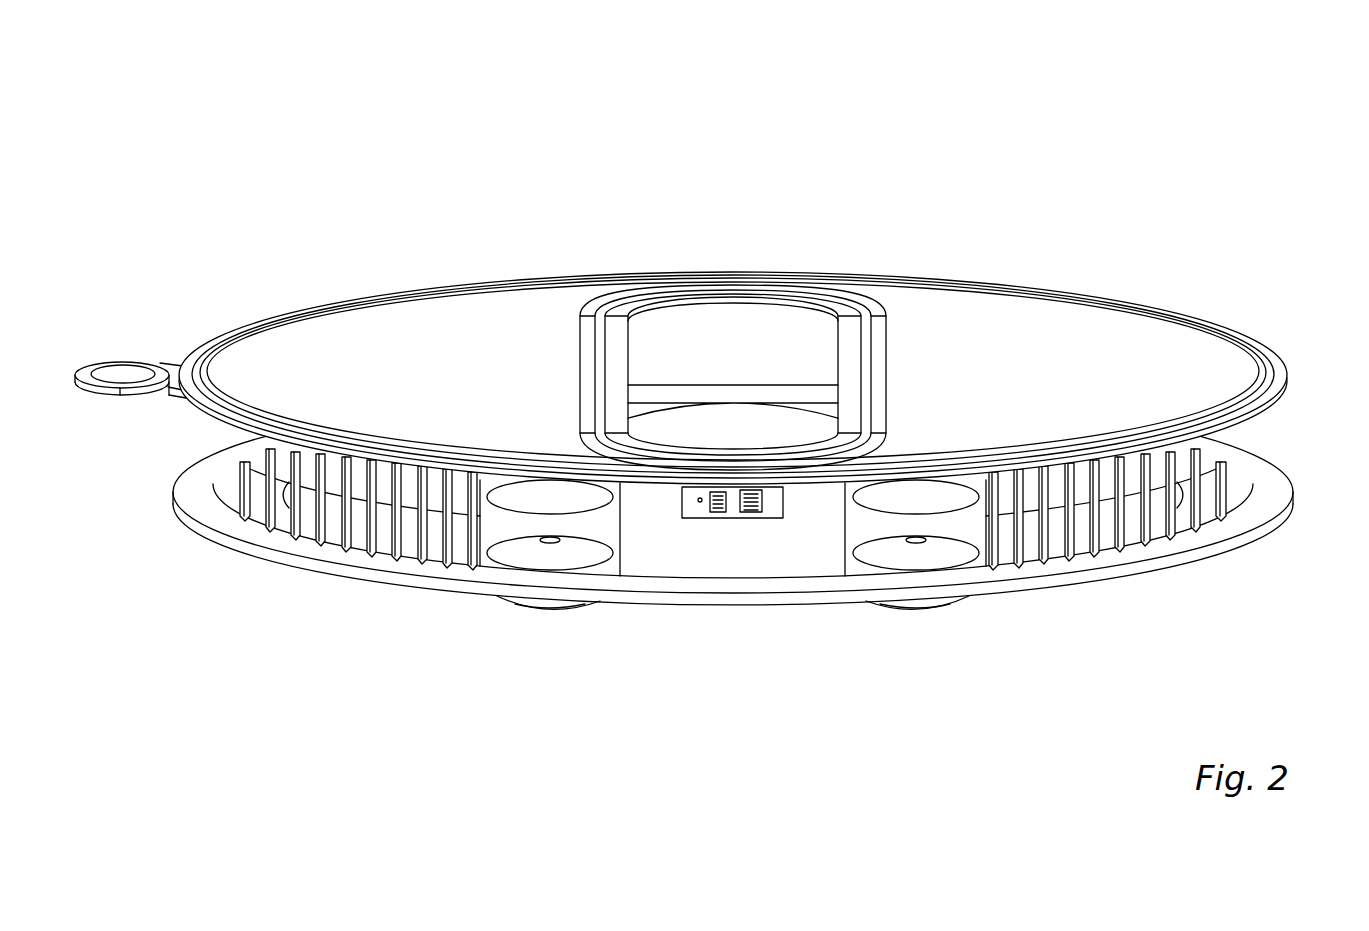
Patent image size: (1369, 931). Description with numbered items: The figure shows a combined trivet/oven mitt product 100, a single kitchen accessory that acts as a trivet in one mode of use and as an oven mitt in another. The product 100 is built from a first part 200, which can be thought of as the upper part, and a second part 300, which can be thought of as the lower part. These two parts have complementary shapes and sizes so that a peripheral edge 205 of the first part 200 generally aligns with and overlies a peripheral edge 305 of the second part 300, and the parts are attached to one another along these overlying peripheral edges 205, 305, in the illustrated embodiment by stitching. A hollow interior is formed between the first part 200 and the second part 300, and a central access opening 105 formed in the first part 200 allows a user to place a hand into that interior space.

The combined trivet/oven mitt product 100 is at (715, 349).
The central access opening 105 is at (707, 325).
The first part 200 is at (681, 323).
The peripheral edge of the first part 205 is at (338, 303).
The second part 300 is at (764, 518).
The peripheral edge of the second part 305 is at (1267, 463).